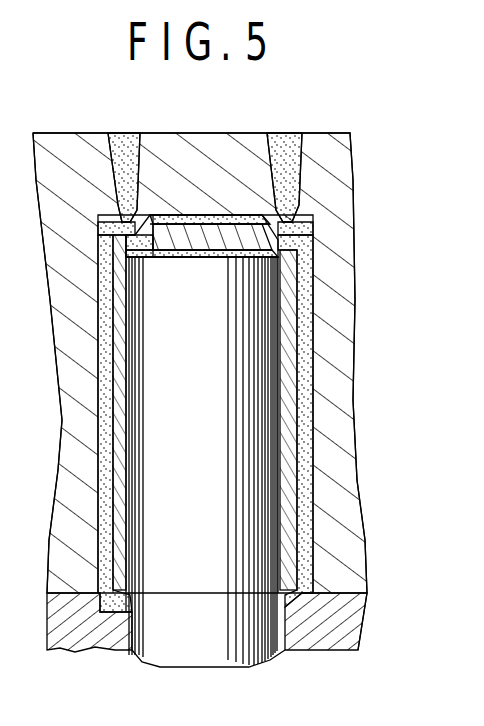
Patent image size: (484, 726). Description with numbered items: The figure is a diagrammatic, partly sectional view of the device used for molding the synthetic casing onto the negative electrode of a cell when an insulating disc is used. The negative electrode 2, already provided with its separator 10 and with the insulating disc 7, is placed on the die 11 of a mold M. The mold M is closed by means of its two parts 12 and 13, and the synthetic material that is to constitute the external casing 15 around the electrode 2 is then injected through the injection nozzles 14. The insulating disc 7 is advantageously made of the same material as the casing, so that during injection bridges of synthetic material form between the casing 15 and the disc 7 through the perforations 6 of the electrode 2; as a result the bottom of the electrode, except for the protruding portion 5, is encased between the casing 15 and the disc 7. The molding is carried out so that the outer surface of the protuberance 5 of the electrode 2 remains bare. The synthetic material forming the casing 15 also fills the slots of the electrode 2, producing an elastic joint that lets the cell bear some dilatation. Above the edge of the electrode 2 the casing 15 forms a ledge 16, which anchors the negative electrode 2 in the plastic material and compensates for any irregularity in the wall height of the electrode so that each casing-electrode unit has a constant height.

The mold M is at (350, 130).
The mold part 12 is at (75, 160).
The injection nozzle 14 is at (282, 133).
The perforation 6 is at (113, 222).
The protruding portion 5 is at (192, 222).
The insulating disc 7 is at (190, 232).
The negative electrode 2 is at (293, 322).
The synthetic casing 15 is at (100, 362).
The separator 10 is at (292, 403).
The die 11 is at (153, 440).
The mold part 13 is at (98, 620).
The ledge 16 is at (300, 600).